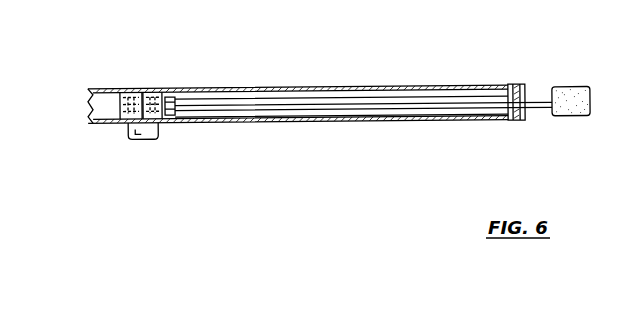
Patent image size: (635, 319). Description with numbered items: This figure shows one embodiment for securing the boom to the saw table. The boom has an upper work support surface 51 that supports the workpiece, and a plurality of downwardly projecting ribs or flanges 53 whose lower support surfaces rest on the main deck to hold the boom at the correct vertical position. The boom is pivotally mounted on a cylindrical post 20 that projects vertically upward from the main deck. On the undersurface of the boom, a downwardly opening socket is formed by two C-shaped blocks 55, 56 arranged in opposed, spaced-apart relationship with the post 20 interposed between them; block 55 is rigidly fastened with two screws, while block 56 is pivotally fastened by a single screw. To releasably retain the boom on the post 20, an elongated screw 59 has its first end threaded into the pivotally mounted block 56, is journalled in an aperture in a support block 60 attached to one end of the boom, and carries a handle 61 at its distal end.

The upper work support surface 51 is at (348, 87).
The downwardly projecting ribs 53 is at (337, 122).
The elongated screw 59 is at (427, 110).
The C-shaped block 55 is at (120, 122).
The C-shaped block 56 is at (165, 122).
The post 20 is at (137, 137).
The support block 60 is at (512, 122).
The handle 61 is at (575, 118).